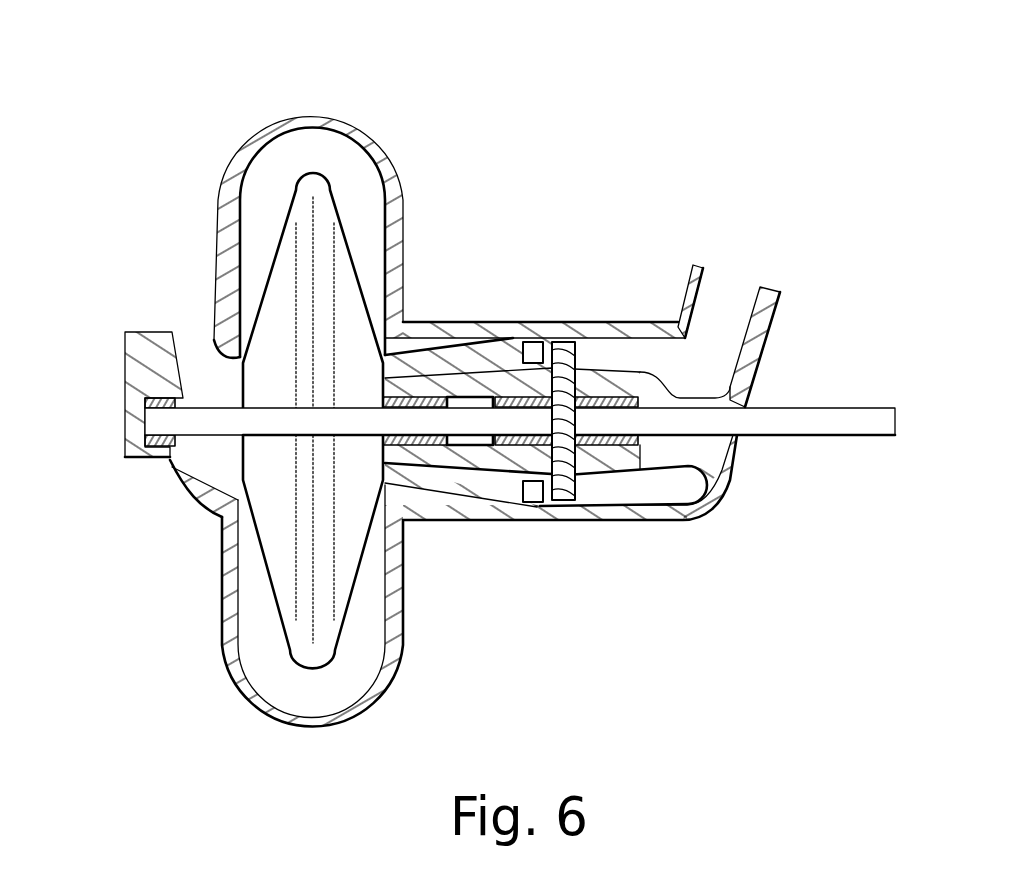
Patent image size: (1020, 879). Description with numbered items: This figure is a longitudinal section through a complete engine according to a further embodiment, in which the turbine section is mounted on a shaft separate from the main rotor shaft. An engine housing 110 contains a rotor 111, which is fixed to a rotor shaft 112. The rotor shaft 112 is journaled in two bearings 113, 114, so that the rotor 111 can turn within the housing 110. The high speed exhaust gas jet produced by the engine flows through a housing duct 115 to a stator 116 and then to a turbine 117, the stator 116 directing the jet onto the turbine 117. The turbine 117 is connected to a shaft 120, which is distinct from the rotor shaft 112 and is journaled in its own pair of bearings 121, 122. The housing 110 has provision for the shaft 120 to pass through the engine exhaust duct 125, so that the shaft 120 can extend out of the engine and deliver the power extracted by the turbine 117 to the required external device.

The engine housing 110 is at (250, 131).
The rotor 111 is at (339, 159).
The rotor shaft 112 is at (198, 416).
The bearing 113 is at (162, 390).
The bearing 114 is at (427, 397).
The housing duct 115 is at (485, 368).
The stator 116 is at (533, 348).
The turbine 117 is at (562, 500).
The shaft 120 is at (845, 437).
The bearing 121 is at (518, 448).
The bearing 122 is at (697, 520).
The engine exhaust duct 125 is at (708, 314).